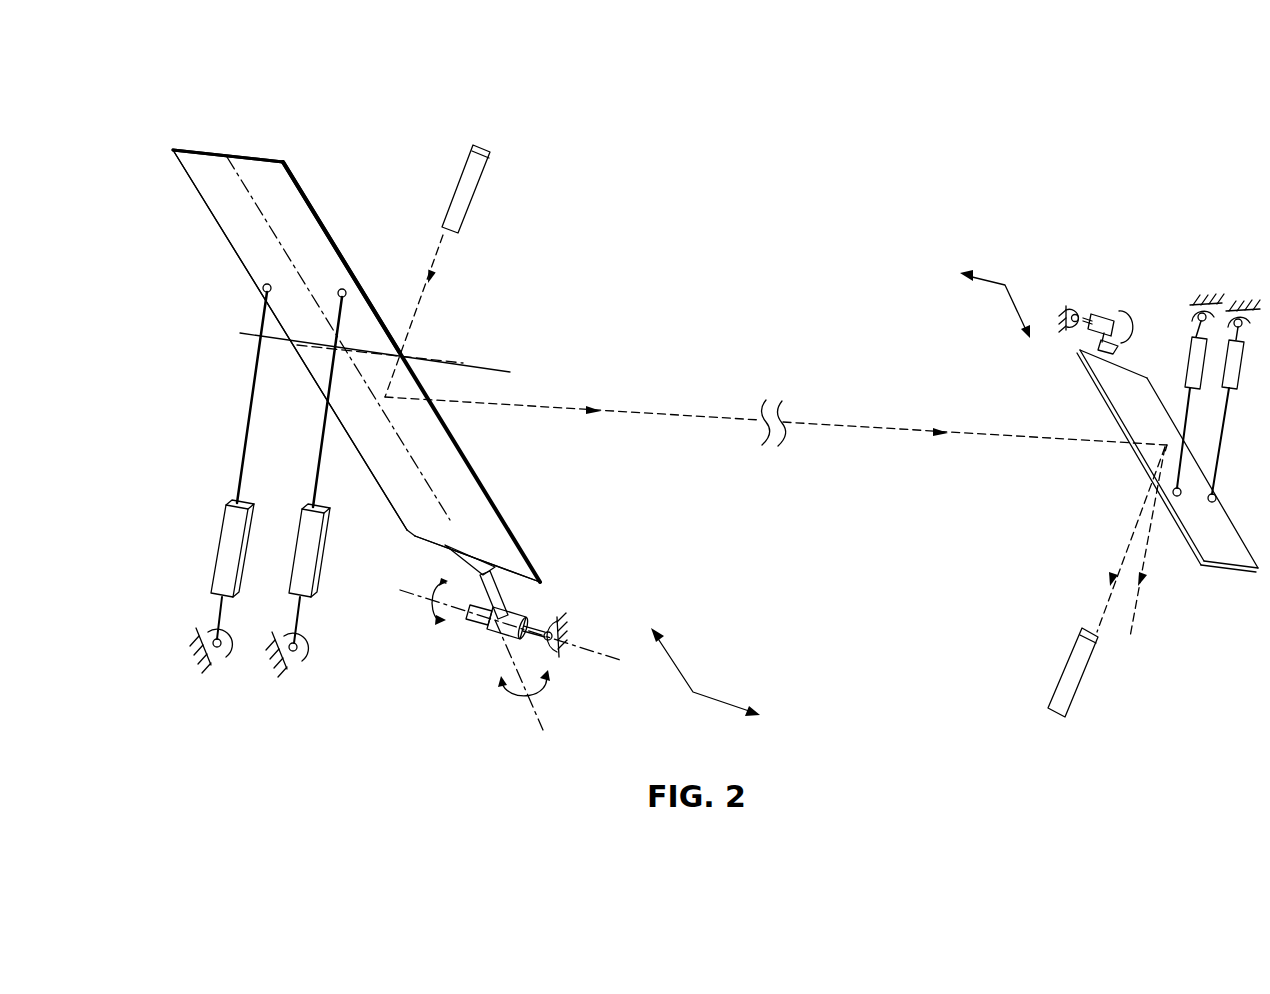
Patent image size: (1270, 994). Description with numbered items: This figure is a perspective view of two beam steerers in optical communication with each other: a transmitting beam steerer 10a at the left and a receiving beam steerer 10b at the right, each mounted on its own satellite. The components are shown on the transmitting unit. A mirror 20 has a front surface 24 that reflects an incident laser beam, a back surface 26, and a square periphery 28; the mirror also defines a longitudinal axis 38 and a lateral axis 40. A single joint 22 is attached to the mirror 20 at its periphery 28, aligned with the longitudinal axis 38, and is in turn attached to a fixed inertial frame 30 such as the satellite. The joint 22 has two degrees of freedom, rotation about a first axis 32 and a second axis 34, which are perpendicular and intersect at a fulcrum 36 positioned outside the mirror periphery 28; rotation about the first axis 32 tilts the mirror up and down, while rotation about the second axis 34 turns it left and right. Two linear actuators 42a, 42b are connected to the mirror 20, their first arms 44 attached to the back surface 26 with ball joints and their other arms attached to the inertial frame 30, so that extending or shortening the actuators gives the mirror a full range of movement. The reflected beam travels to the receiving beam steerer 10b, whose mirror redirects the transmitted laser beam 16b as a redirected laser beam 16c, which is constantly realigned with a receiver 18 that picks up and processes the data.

The beam steerer (transmitting) 10a is at (196, 336).
The beam steerer (receiving) 10b is at (1212, 260).
The laser beam 16b is at (1123, 550).
The redirected laser beam 16c is at (1143, 560).
The receiver 18 is at (1077, 683).
The mirror 20 is at (273, 180).
The joint 22 is at (480, 637).
The front surface 24 is at (312, 178).
The back surface 26 is at (298, 217).
The periphery 28 is at (205, 148).
The fixed inertial frame 30 is at (577, 665).
The first axis 32 is at (420, 590).
The second axis 34 is at (533, 716).
The fulcrum 36 is at (517, 612).
The longitudinal axis 38 is at (267, 220).
The lateral axis 40 is at (470, 367).
The linear actuator 42a is at (212, 568).
The linear actuator 42b is at (317, 583).
The first arms 44 is at (322, 430).